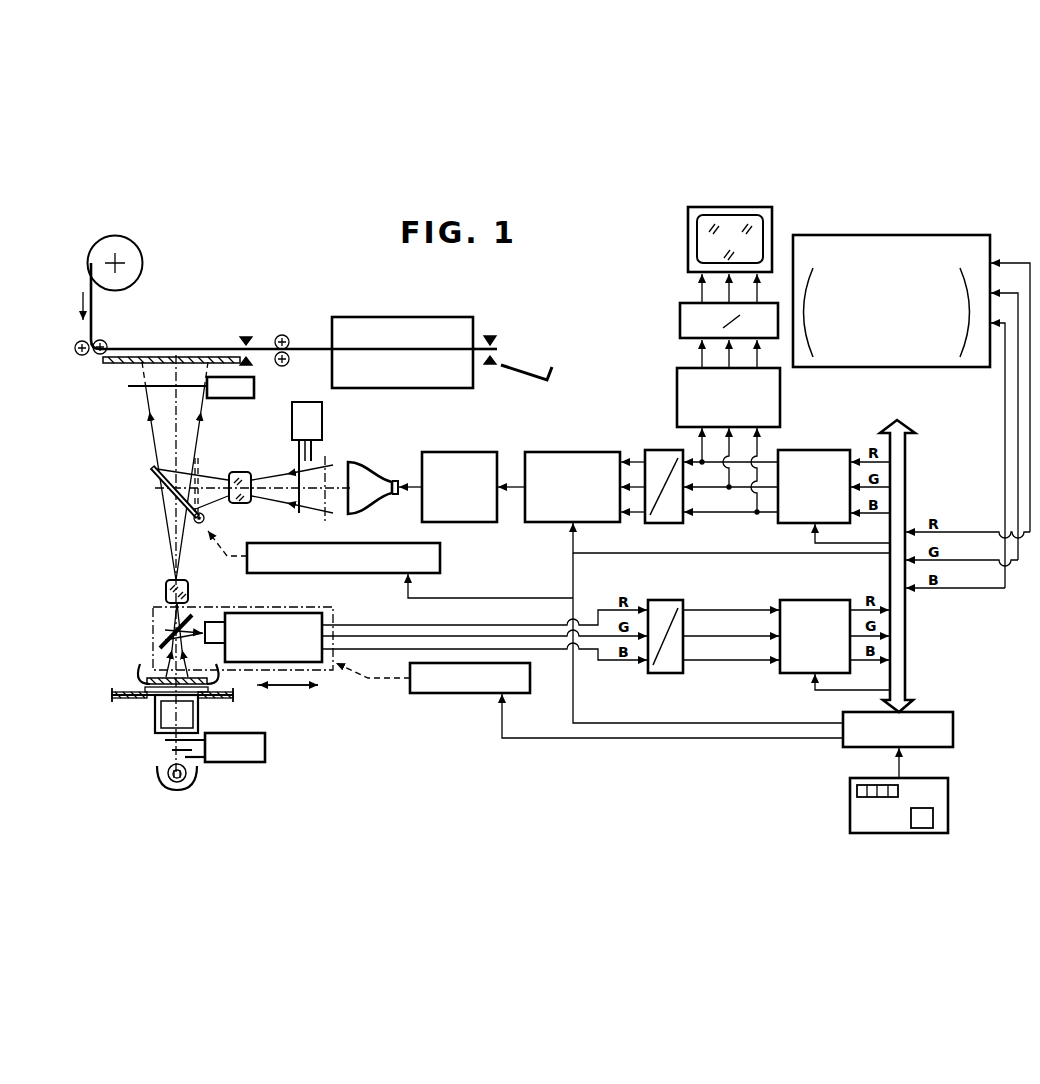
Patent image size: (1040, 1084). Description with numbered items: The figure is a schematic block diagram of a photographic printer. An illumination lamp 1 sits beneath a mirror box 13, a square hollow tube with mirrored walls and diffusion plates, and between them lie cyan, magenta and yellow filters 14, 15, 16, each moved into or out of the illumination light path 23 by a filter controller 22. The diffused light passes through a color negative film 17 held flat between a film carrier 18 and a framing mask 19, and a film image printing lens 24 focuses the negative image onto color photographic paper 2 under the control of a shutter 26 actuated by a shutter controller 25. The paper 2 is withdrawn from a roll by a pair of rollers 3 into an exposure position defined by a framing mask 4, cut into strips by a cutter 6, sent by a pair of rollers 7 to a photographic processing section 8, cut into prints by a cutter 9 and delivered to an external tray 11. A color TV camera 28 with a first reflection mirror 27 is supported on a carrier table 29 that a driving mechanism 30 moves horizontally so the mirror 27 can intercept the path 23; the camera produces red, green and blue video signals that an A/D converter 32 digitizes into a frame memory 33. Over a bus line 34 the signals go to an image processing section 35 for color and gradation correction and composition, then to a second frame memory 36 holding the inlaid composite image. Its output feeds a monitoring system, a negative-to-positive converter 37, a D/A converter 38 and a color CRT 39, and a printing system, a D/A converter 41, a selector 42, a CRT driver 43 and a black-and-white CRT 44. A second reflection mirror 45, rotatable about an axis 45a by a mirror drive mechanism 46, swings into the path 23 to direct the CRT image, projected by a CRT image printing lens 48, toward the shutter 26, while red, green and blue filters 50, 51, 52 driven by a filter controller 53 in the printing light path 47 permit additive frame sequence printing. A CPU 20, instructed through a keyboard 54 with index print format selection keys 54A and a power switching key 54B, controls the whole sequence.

The illumination lamp 1 is at (191, 786).
The color photographic paper 2 is at (163, 347).
The pair of rollers 3 is at (105, 341).
The framing mask 4 is at (108, 365).
The cutter 6 is at (246, 335).
The pair of rollers 7 is at (283, 335).
The photographic processing section 8 is at (403, 317).
The cutter 9 is at (490, 335).
The external tray 11 is at (519, 365).
The mirror box 13 is at (155, 715).
The cyan filter 14 is at (197, 758).
The magenta filter 15 is at (175, 751).
The yellow filter 16 is at (165, 740).
The color negative film 17 is at (138, 672).
The film carrier 18 is at (200, 698).
The framing mask 19 is at (150, 677).
The CPU 20 is at (953, 728).
The filter controller 22 is at (265, 750).
The illumination light path 23 is at (172, 532).
The film image printing lens 24 is at (186, 582).
The shutter controller 25 is at (254, 387).
The shutter 26 is at (137, 392).
The first reflection mirror 27 is at (165, 640).
The color TV camera 28 is at (325, 616).
The carrier table 29 is at (335, 605).
The driving mechanism 30 is at (468, 693).
The A/D converter 32 is at (665, 600).
The frame memory 33 is at (815, 600).
The bus line 34 is at (906, 658).
The image processing section 35 is at (895, 367).
The frame memory 36 is at (815, 450).
The negative-to-positive reversal converter 37 is at (677, 391).
The D/A converter 38 is at (680, 322).
The color CRT 39 is at (688, 234).
The D/A converter 41 is at (660, 450).
The selector 42 is at (573, 452).
The CRT driver 43 is at (455, 452).
The CRT 44 is at (368, 497).
The second reflection mirror 45 is at (152, 470).
The axis 45a is at (206, 520).
The mirror drive mechanism 46 is at (440, 553).
The printing light path 47 is at (326, 498).
The CRT image printing lens 48 is at (240, 471).
The red filter 50 is at (297, 509).
The green filter 51 is at (318, 456).
The blue filter 52 is at (322, 446).
The filter controller 53 is at (292, 418).
The keyboard 54 is at (893, 790).
The index print format selection keys 54A is at (857, 790).
The power switching key 54B is at (933, 817).